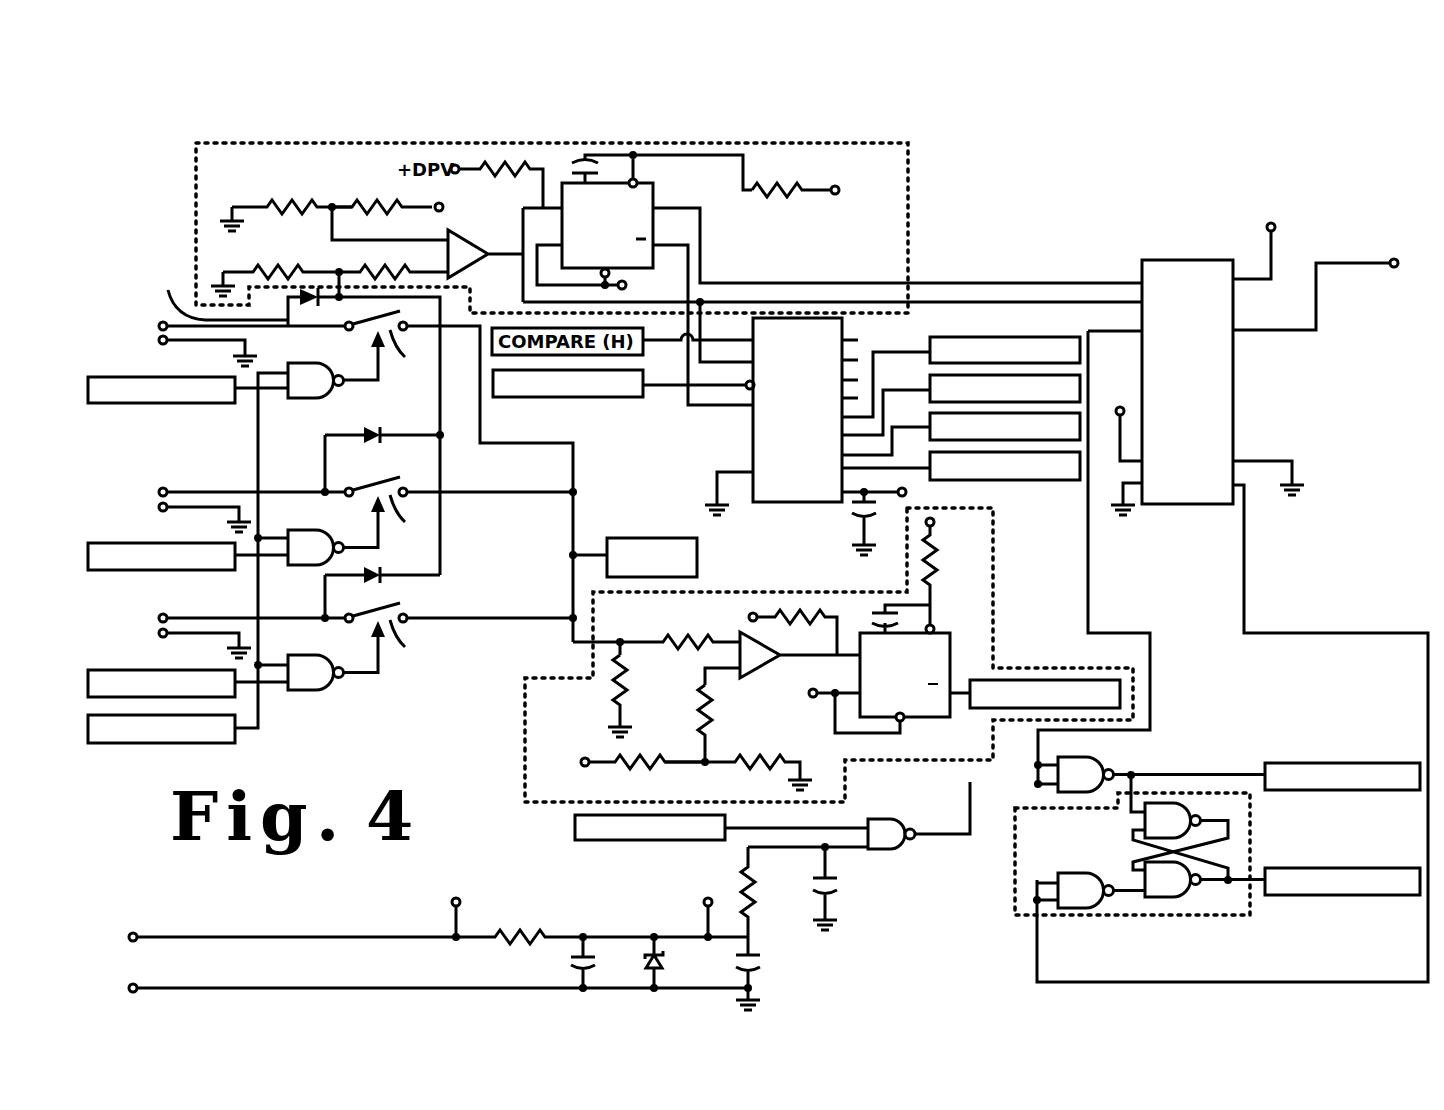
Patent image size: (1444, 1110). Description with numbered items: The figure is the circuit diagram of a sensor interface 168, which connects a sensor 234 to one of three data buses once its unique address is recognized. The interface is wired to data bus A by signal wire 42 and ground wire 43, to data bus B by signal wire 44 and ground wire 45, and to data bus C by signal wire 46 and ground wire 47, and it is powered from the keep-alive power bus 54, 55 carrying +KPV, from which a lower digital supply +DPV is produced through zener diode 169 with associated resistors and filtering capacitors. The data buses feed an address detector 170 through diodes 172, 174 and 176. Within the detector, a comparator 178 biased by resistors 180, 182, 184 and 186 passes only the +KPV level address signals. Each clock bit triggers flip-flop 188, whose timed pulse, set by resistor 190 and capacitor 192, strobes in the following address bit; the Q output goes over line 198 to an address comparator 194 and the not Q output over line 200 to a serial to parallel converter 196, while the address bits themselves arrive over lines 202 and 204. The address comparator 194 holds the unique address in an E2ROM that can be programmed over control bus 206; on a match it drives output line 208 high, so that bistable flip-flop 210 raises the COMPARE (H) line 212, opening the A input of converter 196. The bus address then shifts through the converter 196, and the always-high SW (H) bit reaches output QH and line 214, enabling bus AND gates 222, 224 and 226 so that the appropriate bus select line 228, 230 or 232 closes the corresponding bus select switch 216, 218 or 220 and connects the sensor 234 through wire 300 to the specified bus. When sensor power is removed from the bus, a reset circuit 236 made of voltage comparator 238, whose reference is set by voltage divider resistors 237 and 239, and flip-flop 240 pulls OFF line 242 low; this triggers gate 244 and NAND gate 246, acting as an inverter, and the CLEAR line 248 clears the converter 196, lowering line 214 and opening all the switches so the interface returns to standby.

The signal wire 42 is at (185, 325).
The ground wire 43 is at (175, 344).
The signal wire 44 is at (234, 490).
The ground wire 45 is at (218, 511).
The signal wire 46 is at (189, 615).
The ground wire 47 is at (177, 637).
The keep-alive power bus 54 is at (217, 935).
The keep-alive power bus 55 is at (200, 987).
The sensor interface 168 is at (466, 728).
The zener diode 169 is at (660, 957).
The address detector 170 is at (908, 246).
The diode 172 is at (288, 419).
The diode 174 is at (366, 428).
The diode 176 is at (374, 570).
The comparator 178 is at (427, 254).
The biasing resistor 180 is at (302, 269).
The biasing resistor 182 is at (310, 205).
The biasing resistor 184 is at (380, 205).
The biasing resistor 186 is at (382, 270).
The flip-flop 188 is at (653, 206).
The resistor 190 is at (768, 194).
The capacitor 192 is at (576, 176).
The address comparator 194 is at (1197, 259).
The serial to parallel converter 196 is at (842, 318).
The line 198 is at (700, 228).
The line 200 is at (720, 405).
The line 202 is at (1075, 311).
The line 204 is at (700, 326).
The control bus 206 is at (1340, 265).
The output line 208 is at (1246, 610).
The bistable flip-flop 210 is at (1200, 920).
The COMPARE (H) line 212 is at (668, 348).
The line 214 is at (888, 464).
The bus select switch 216 is at (391, 646).
The bus select switch 218 is at (389, 521).
The bus select switch 220 is at (386, 356).
The bus AND gate 222 is at (328, 692).
The bus AND gate 224 is at (325, 567).
The bus AND gate 226 is at (328, 402).
The bus select line 228 is at (891, 425).
The bus select line 230 is at (888, 391).
The bus select line 232 is at (242, 676).
The sensor 234 is at (650, 582).
The reset circuit 236 is at (996, 612).
The voltage divider resistor 237 is at (890, 352).
The voltage comparator 238 is at (763, 638).
The voltage divider resistor 239 is at (790, 760).
The flip-flop 240 is at (953, 642).
The OFF line 242 is at (960, 700).
The gate 244 is at (902, 847).
The NAND gate 246 is at (1094, 757).
The CLEAR line 248 is at (1240, 773).
The wire 300 is at (580, 555).